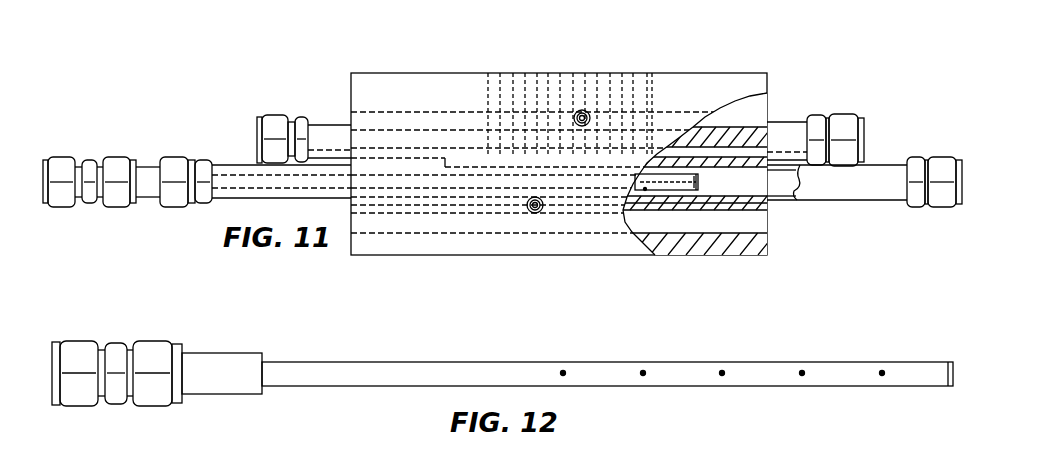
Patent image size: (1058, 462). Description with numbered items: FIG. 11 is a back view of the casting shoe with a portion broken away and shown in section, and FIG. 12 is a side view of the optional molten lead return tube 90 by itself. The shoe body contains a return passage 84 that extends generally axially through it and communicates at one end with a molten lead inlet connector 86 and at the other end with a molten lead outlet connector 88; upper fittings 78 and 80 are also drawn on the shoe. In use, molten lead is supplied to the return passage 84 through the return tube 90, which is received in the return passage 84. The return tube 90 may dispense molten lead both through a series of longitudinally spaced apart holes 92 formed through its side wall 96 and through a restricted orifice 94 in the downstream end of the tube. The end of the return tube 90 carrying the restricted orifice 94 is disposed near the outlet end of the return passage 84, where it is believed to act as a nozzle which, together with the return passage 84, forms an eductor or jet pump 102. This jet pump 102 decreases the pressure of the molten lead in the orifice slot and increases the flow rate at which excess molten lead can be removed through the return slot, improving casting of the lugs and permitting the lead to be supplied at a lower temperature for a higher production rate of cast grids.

In FIG. 11, the first conduit 78 is at (330, 124).
In FIG. 11, the second conduit 80 is at (787, 122).
In FIG. 11, the return passage 84 is at (757, 186).
In FIG. 11, the molten lead inlet connector 86 is at (233, 165).
In FIG. 11, the molten lead outlet connector 88 is at (885, 164).
In FIG. 11, the return tube 90 is at (661, 190).
In FIG. 12, the return tube 90 is at (375, 389).
In FIG. 11, the holes 92 is at (645, 190).
In FIG. 12, the holes 92 is at (721, 376).
In FIG. 11, the restricted orifice 94 is at (700, 179).
In FIG. 12, the side wall 96 is at (450, 372).
In FIG. 11, the eductor or jet pump 102 is at (703, 191).